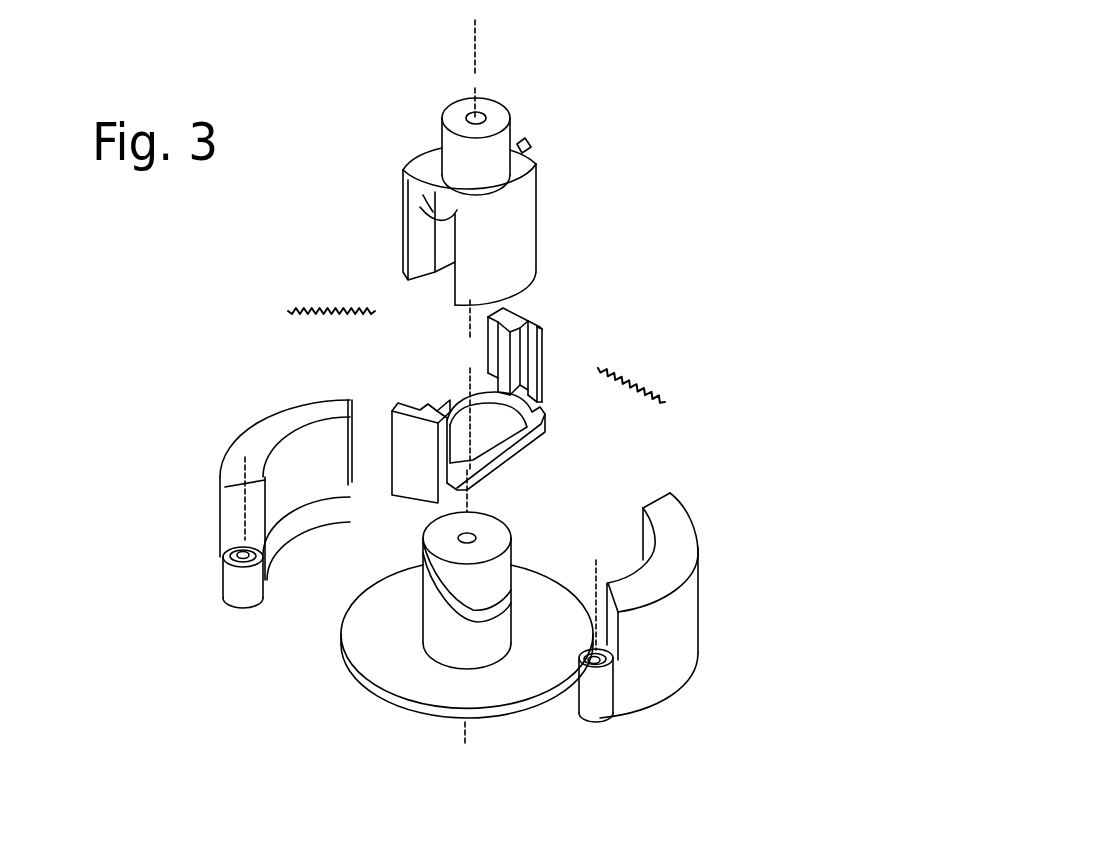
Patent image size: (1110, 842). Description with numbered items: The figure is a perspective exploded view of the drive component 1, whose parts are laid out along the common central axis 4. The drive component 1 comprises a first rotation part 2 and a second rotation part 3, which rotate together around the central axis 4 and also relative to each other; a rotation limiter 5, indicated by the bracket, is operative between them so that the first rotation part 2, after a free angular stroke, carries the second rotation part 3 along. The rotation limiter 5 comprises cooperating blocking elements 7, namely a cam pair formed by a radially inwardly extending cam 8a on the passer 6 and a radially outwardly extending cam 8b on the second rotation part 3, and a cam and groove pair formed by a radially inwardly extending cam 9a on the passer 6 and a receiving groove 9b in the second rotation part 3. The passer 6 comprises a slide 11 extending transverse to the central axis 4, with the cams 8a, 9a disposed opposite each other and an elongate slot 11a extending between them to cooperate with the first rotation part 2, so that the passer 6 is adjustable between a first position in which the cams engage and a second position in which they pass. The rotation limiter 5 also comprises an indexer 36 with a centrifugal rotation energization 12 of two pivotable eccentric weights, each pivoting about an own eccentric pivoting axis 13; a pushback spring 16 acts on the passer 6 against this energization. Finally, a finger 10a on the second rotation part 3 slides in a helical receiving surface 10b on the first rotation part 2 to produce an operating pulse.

The drive component 1 is at (645, 119).
The first rotation part 2 is at (377, 668).
The second rotation part 3 is at (522, 247).
The central axis 4 is at (476, 57).
The rotation limiter 5 is at (762, 698).
The passer 6 is at (403, 483).
The cooperating blocking elements 7 is at (437, 216).
The radially inwardly extending cam 8a is at (505, 324).
The radially outwardly extending cam 8b is at (524, 141).
The radially inwardly extending cam 9a is at (432, 409).
The receiving groove 9b is at (438, 218).
The finger 10a is at (455, 283).
The receiving surface 10b is at (458, 607).
The slide 11 is at (545, 366).
The elongate slot 11a is at (490, 423).
The rotation energization 12 is at (240, 452).
The pivoting axis 13 is at (225, 557).
The pushback spring 16 is at (322, 311).
The indexer 36 is at (350, 422).